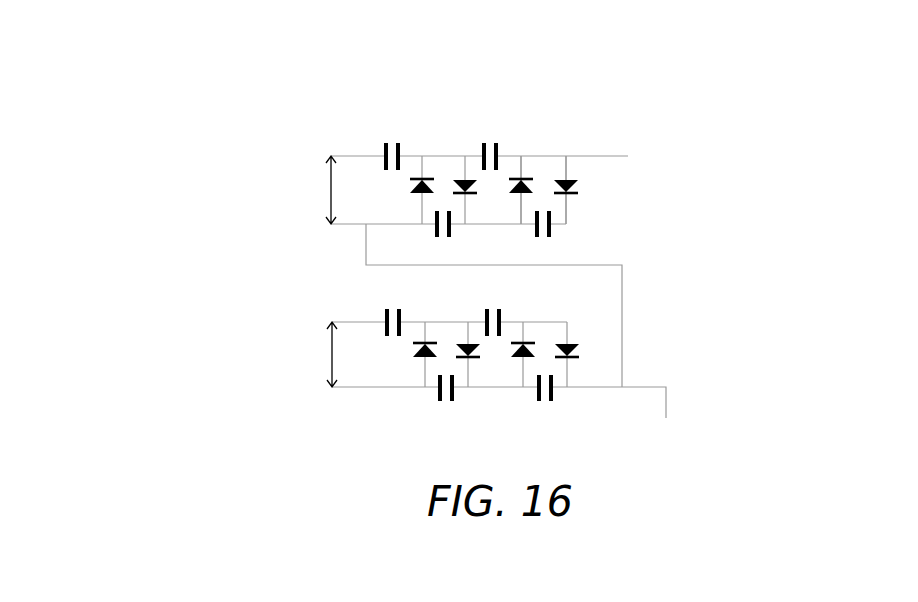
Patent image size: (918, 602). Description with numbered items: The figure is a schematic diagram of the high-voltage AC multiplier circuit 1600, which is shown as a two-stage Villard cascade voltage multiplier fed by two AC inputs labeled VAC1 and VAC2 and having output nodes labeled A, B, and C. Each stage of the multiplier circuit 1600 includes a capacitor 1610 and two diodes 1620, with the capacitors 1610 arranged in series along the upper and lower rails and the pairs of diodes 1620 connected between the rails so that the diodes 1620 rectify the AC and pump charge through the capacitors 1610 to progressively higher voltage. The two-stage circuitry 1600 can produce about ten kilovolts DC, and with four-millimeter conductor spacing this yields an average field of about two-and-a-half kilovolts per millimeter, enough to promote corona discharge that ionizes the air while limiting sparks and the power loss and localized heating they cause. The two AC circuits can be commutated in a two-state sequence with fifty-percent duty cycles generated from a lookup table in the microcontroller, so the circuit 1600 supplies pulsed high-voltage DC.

The high-voltage AC multiplier circuit 1600 is at (108, 52).
The capacitor 1610 is at (492, 128).
The diodes 1620 is at (573, 152).